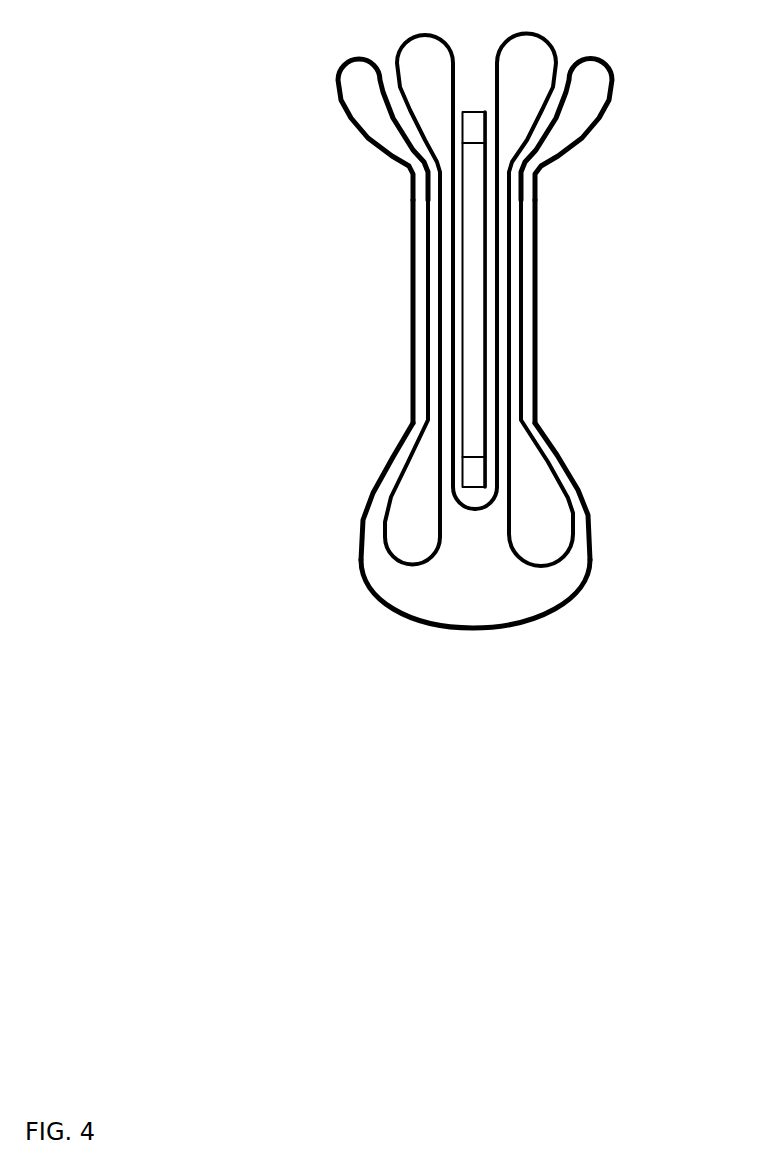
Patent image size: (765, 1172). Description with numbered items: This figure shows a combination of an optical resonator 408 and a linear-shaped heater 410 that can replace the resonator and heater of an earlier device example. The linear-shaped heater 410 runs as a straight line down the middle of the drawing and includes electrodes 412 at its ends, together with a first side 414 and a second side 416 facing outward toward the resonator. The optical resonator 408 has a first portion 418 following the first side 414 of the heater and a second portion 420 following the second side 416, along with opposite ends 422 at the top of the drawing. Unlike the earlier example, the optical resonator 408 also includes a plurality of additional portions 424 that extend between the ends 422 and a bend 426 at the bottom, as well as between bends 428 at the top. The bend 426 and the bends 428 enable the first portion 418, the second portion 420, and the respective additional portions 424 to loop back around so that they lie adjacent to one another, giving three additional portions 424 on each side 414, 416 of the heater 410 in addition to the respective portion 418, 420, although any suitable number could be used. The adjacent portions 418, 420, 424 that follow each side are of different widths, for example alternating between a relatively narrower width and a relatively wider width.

The optical resonator 408 is at (593, 572).
The linear-shaped heater 410 is at (488, 385).
The electrodes 412 is at (487, 128).
The first side 414 is at (458, 245).
The second side 416 is at (490, 247).
The first portion 418 is at (453, 300).
The second portion 420 is at (498, 293).
The opposite ends 422 is at (390, 57).
The additional portions 424 is at (408, 352).
The bend 426 is at (386, 617).
The bends 428 is at (337, 87).